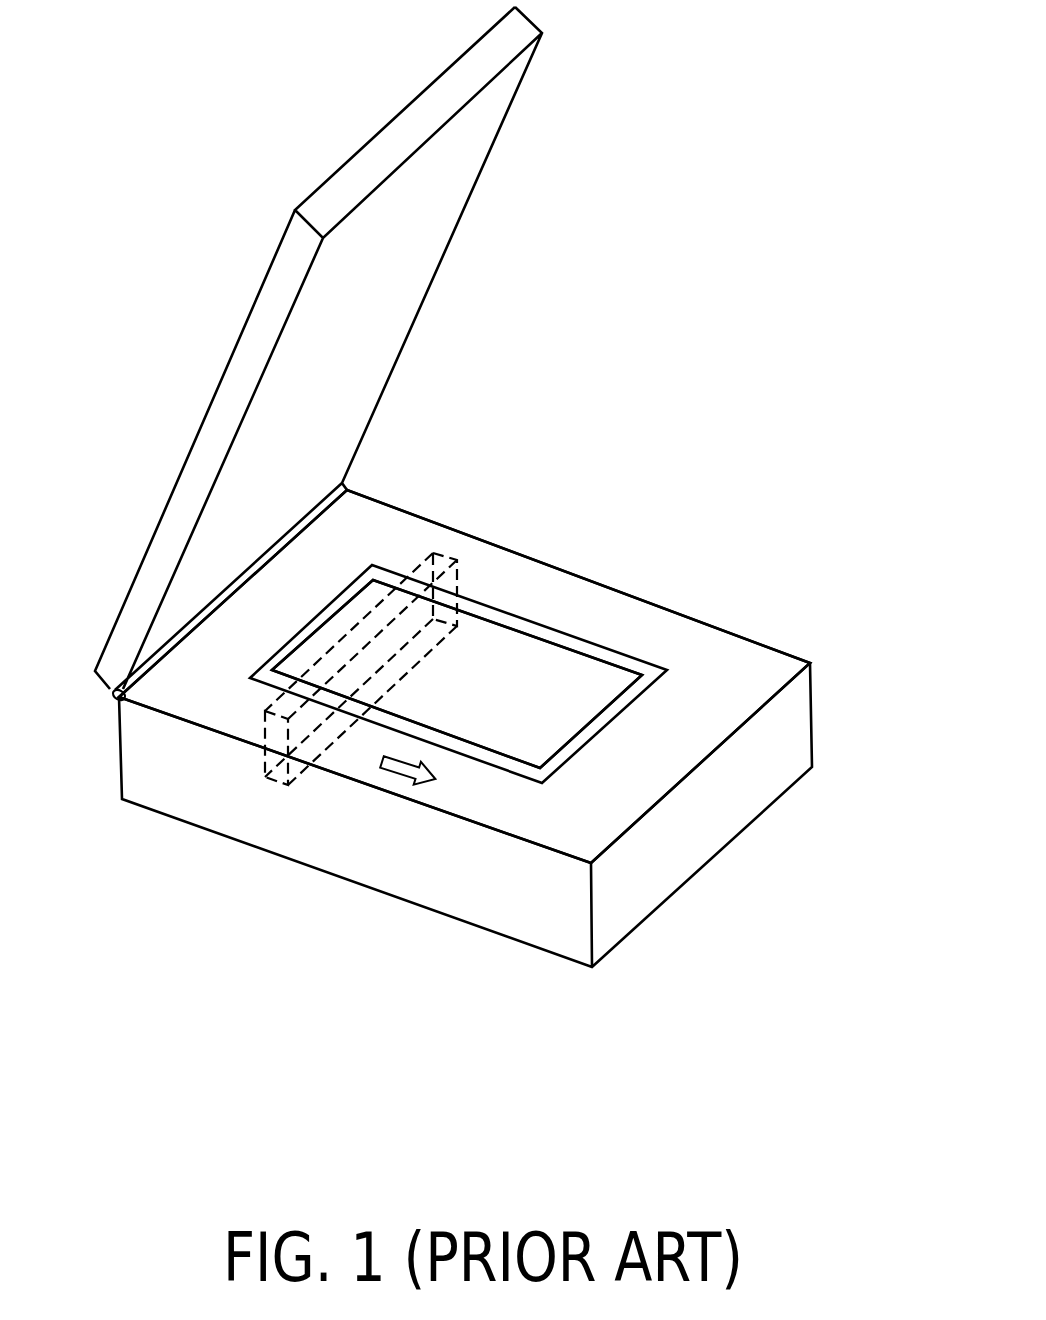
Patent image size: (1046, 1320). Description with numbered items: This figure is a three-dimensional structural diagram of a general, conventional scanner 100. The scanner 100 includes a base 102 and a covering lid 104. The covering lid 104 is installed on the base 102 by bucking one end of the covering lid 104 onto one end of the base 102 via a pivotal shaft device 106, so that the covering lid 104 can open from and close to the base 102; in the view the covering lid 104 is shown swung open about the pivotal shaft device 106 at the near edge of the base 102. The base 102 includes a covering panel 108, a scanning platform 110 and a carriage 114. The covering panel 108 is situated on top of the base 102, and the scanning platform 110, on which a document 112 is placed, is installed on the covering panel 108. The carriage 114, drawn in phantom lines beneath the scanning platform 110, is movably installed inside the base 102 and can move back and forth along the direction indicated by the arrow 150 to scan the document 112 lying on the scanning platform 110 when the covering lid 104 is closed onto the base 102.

The scanner 100 is at (822, 673).
The base 102 is at (695, 833).
The covering lid 104 is at (222, 393).
The pivotal shaft device 106 is at (113, 699).
The covering panel 108 is at (654, 628).
The scanning platform 110 is at (587, 650).
The document 112 is at (525, 742).
The carriage 114 is at (445, 556).
The arrow 150 is at (400, 770).